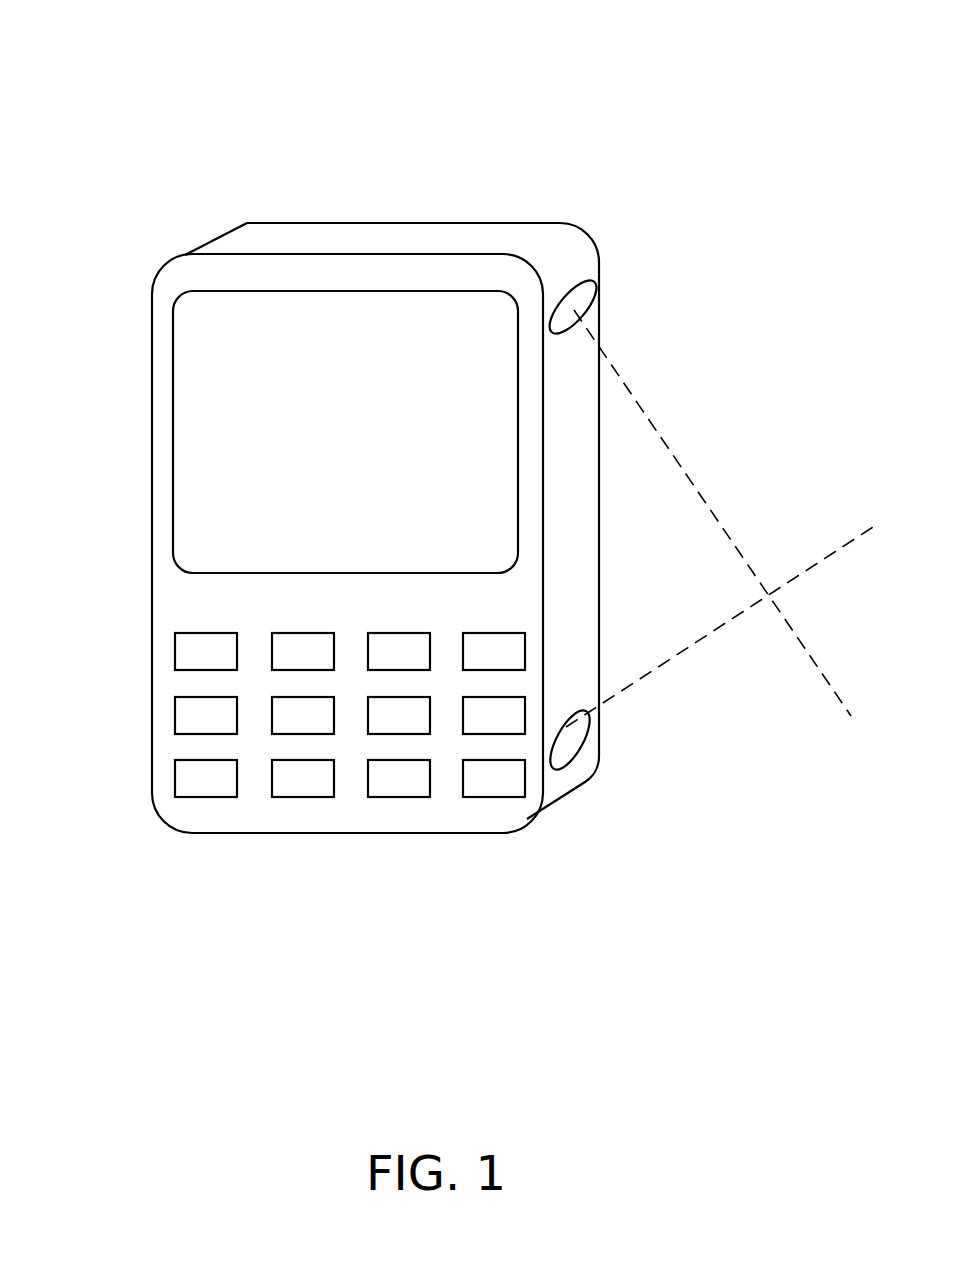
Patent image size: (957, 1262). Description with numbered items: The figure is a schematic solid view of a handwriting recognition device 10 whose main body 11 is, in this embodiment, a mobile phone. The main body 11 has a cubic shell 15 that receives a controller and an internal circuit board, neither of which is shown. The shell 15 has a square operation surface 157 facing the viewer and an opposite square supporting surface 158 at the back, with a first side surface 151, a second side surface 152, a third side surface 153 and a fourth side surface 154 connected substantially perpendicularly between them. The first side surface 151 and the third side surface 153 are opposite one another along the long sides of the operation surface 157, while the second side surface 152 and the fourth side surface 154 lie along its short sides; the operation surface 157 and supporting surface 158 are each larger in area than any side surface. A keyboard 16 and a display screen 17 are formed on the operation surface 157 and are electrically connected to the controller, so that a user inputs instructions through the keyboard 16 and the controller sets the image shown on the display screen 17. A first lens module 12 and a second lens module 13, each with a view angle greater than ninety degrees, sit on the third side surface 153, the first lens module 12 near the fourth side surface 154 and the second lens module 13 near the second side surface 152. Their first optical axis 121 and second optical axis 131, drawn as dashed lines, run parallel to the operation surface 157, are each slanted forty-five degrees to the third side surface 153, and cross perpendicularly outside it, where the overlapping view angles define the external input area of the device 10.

The handwriting recognition device 10 is at (449, 479).
The main body 11 is at (209, 237).
The first lens module 12 is at (587, 297).
The first optical axis 121 is at (687, 473).
The second lens module 13 is at (578, 757).
The second optical axis 131 is at (675, 662).
The cubic shell 15 is at (348, 538).
The first side surface 151 is at (150, 481).
The second side surface 152 is at (424, 839).
The third side surface 153 is at (555, 788).
The fourth side surface 154 is at (413, 240).
The operation surface 157 is at (357, 812).
The supporting surface 158 is at (314, 221).
The keyboard 16 is at (185, 647).
The display screen 17 is at (200, 315).